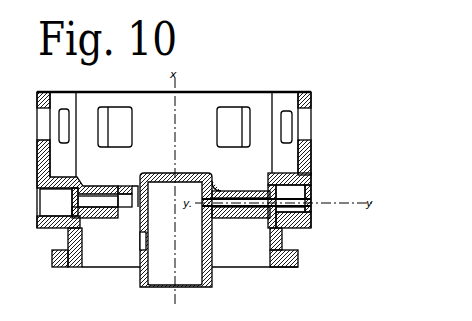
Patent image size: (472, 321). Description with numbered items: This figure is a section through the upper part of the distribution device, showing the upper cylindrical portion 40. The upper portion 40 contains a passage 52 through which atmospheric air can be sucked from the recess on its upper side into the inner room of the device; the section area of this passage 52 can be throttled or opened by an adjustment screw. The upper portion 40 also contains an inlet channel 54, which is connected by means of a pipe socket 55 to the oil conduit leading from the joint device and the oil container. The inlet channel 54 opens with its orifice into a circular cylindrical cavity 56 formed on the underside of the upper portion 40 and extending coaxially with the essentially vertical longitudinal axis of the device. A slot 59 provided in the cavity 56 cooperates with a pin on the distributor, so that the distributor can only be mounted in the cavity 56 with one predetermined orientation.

The upper cylindrical portion 40 is at (321, 92).
The passage 52 is at (127, 193).
The inlet channel 54 is at (226, 191).
The pipe socket 55 is at (300, 216).
The circular cylindrical cavity 56 is at (202, 242).
The slot 59 is at (140, 253).